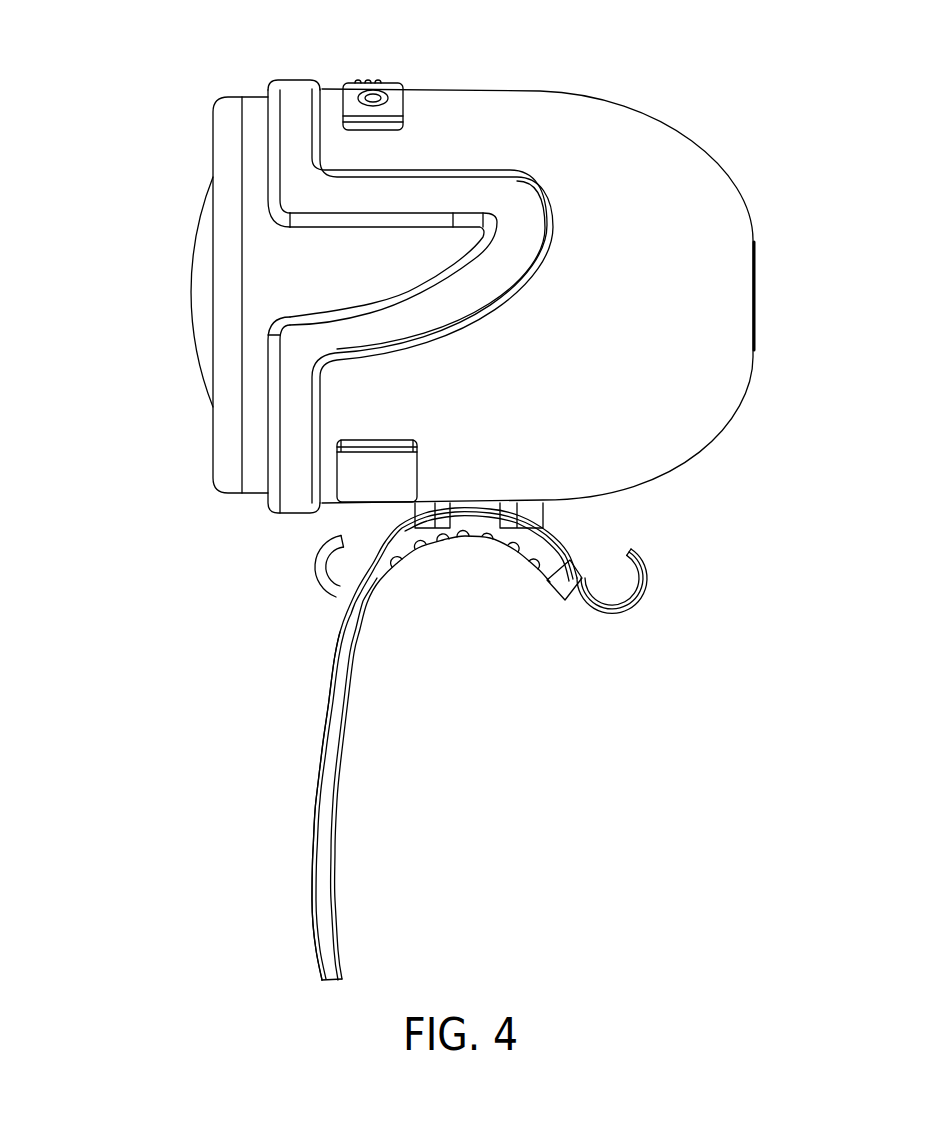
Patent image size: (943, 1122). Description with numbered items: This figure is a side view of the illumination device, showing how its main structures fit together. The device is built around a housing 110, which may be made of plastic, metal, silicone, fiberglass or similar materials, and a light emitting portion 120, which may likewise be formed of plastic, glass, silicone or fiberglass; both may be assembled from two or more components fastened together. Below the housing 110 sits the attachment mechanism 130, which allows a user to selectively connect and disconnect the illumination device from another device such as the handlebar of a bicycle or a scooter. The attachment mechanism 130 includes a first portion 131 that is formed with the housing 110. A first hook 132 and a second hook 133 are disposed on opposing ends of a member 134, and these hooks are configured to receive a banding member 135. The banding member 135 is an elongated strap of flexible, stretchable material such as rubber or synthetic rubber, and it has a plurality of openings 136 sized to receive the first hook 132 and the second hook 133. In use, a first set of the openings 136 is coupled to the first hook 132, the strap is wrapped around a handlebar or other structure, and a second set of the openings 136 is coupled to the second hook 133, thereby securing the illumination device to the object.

The housing 110 is at (732, 108).
The light emitting portion 120 is at (128, 112).
The attachment mechanism 130 is at (512, 665).
The first portion 131 is at (345, 521).
The first hook 132 is at (300, 590).
The second hook 133 is at (660, 596).
The member 134 is at (590, 556).
The banding member 135 is at (320, 805).
The plurality of openings 136 is at (370, 825).